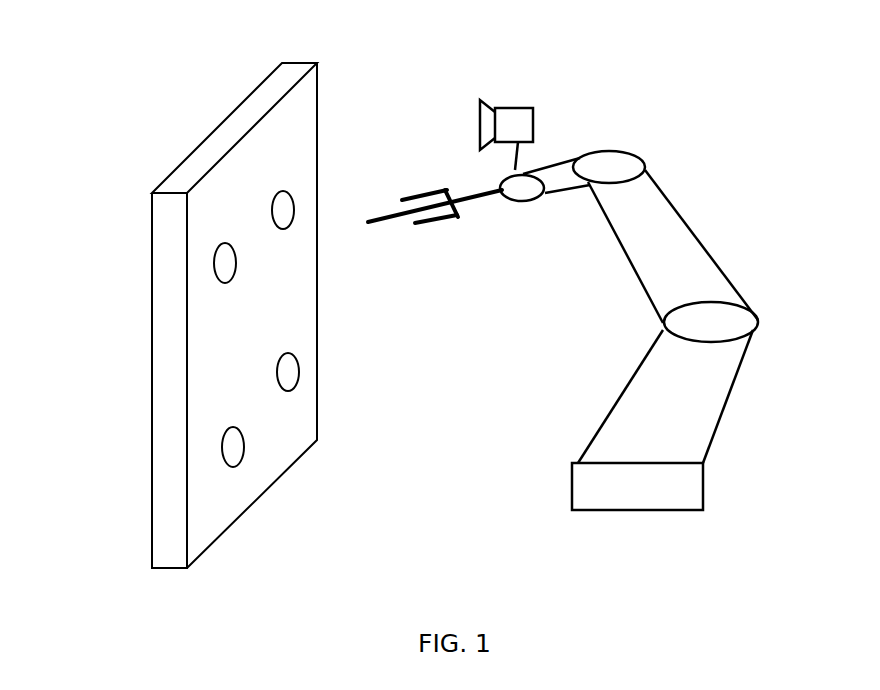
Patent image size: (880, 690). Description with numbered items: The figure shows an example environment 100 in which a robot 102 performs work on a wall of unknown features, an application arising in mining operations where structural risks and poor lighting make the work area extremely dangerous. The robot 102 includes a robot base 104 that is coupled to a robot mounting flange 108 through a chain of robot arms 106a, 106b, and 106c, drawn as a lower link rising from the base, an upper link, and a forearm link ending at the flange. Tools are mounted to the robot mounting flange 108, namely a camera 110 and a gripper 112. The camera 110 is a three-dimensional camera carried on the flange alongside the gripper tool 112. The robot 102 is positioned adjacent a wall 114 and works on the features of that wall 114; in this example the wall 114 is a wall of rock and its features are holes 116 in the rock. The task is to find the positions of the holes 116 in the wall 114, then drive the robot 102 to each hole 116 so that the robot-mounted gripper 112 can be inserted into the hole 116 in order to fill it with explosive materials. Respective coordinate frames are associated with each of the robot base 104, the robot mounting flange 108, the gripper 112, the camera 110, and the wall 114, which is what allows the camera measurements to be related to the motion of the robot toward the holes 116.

The environment 100 is at (145, 70).
The robot 102 is at (713, 147).
The robot base 104 is at (685, 503).
The robot arm 106a is at (727, 388).
The robot arm 106b is at (692, 248).
The robot arm 106c is at (560, 172).
The robot mounting flange 108 is at (527, 192).
The camera 110 is at (523, 115).
The gripper 112 is at (433, 223).
The wall 114 is at (157, 250).
The holes 116 is at (220, 273).